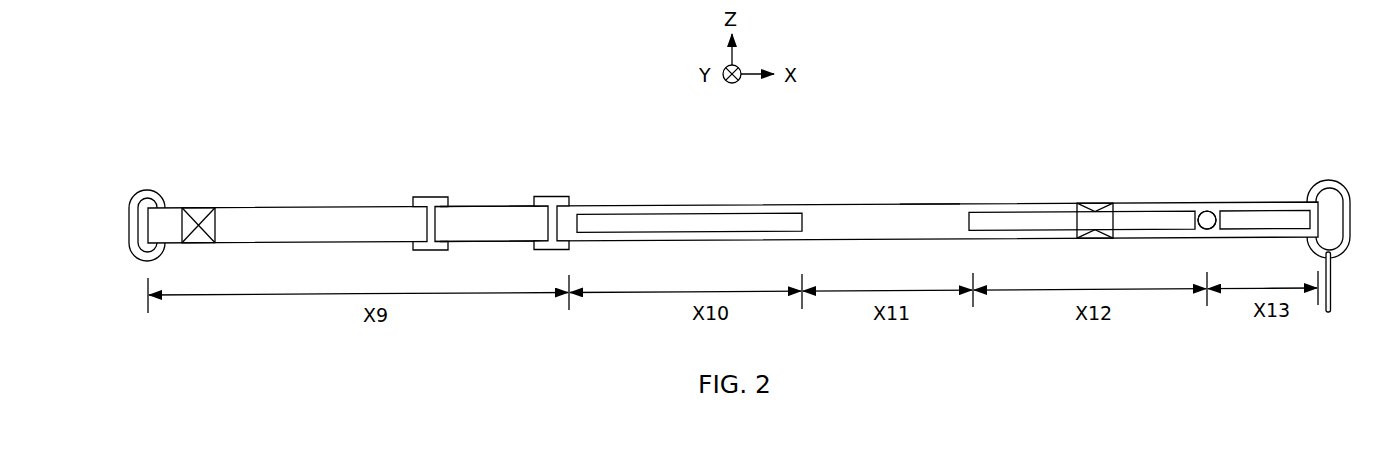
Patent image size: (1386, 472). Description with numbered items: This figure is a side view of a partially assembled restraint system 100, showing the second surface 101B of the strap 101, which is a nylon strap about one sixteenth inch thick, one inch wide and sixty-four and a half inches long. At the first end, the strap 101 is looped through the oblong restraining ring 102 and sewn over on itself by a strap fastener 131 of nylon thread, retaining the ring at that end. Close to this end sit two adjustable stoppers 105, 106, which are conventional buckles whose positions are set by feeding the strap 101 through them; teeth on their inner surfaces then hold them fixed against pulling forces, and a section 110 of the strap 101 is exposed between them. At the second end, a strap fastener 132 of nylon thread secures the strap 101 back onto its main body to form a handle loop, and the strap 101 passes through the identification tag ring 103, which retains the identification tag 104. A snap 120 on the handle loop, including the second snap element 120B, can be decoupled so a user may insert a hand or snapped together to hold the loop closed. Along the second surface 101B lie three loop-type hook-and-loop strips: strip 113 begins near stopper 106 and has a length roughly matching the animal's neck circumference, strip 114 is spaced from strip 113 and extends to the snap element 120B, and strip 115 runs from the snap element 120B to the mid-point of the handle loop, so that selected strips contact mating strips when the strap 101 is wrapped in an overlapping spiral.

The restraint system 100 is at (630, 151).
The strap 101 is at (854, 202).
The second surface 101B is at (920, 212).
The restraining ring 102 is at (148, 190).
The identification tag ring 103 is at (1335, 182).
The identification tag 104 is at (1330, 312).
The adjustable stopper 105 is at (430, 201).
The adjustable stopper 106 is at (553, 199).
The strap section 110 is at (492, 210).
The VELCRO strip 113 is at (732, 218).
The VELCRO strip 114 is at (1000, 215).
The VELCRO strip 115 is at (1268, 214).
The snap 120 is at (1202, 209).
The second snap element 120B is at (1212, 213).
The strap fastener 131 is at (198, 212).
The strap fastener 132 is at (1097, 207).